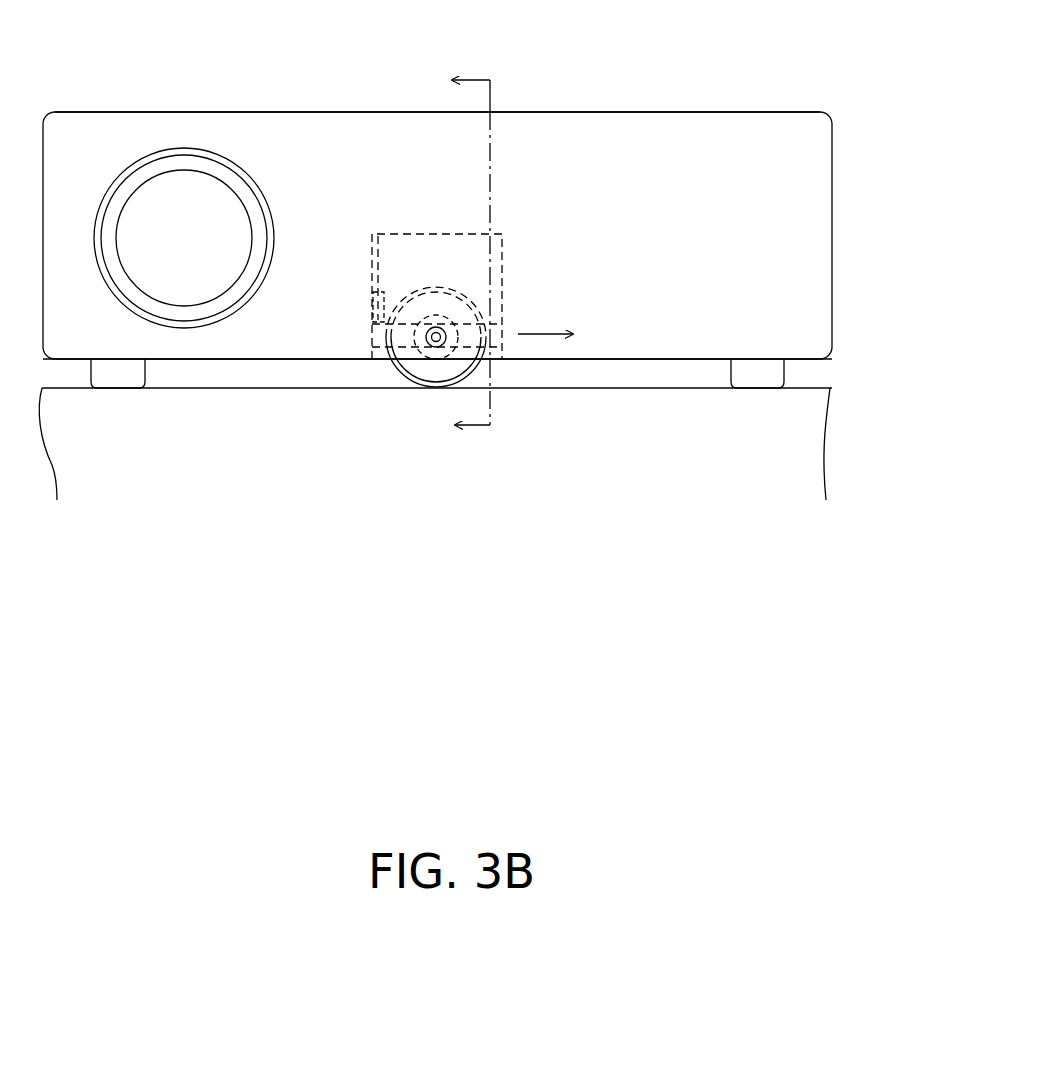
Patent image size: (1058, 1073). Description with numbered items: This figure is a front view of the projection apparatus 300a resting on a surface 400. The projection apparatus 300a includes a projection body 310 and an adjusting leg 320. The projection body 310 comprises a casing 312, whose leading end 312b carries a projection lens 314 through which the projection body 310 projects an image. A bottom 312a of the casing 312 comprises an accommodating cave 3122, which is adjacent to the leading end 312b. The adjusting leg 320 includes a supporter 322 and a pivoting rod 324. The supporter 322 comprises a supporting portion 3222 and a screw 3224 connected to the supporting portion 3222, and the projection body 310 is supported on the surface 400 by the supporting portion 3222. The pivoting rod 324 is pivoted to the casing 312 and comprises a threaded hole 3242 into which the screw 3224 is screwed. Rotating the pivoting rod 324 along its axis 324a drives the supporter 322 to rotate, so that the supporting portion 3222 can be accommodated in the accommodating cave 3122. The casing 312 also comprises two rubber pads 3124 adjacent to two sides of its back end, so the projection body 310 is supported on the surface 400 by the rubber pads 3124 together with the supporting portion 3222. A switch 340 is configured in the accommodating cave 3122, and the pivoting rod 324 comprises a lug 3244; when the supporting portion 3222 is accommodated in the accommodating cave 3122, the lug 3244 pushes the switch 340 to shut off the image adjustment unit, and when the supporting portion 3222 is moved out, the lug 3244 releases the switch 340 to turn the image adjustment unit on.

The projection apparatus 300a is at (842, 728).
The projection body 310 is at (173, 67).
The casing 312 is at (88, 153).
The projection lens 314 is at (187, 160).
The bottom 312a is at (652, 362).
The leading end 312b is at (328, 148).
The accommodating cave 3122 is at (432, 233).
The rubber pads 3124 is at (114, 378).
The adjusting leg 320 is at (525, 668).
The supporter 322 is at (480, 630).
The supporting portion 3222 is at (436, 348).
The screw 3224 is at (438, 386).
The pivoting rod 324 is at (481, 340).
The axis 324a is at (532, 338).
The threaded hole 3242 is at (425, 360).
The lug 3244 is at (427, 349).
The switch 340 is at (373, 308).
The surface 400 is at (814, 385).